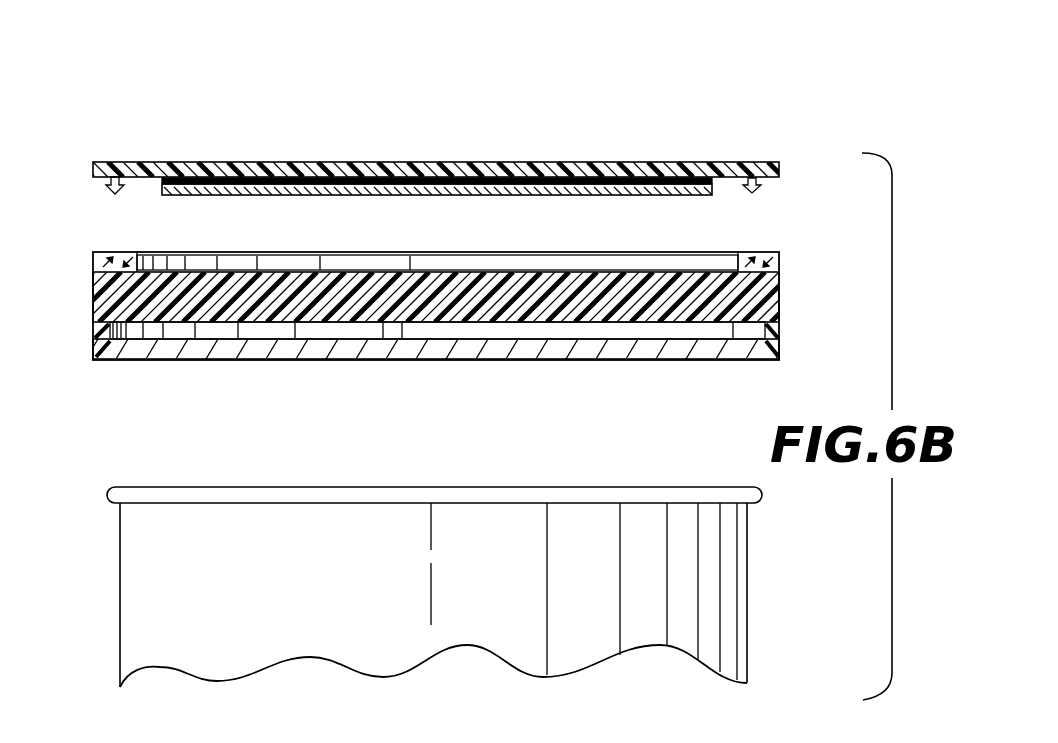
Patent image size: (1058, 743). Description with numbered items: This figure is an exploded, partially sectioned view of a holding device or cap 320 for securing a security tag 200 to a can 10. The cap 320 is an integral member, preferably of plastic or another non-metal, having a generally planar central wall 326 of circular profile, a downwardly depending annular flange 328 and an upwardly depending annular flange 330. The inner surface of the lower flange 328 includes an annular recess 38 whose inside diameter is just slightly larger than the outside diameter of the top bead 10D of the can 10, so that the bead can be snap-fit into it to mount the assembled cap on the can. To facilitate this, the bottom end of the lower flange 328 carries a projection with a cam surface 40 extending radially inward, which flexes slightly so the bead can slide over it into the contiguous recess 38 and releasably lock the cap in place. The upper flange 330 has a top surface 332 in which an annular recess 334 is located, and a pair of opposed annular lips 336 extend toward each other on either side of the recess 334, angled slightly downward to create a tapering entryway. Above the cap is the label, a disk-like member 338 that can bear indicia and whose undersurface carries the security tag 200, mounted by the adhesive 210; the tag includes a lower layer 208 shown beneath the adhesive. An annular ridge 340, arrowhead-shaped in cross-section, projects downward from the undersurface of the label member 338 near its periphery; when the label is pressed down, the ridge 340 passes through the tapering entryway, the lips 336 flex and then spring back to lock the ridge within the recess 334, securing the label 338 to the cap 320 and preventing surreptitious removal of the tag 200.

The can 10 is at (407, 556).
The top bead 10D is at (177, 492).
The annular recess 38 is at (352, 332).
The cam surface 40 is at (115, 342).
The security tag 200 is at (422, 152).
The lower layer 208 is at (288, 197).
The adhesive 210 is at (188, 175).
The holding device 320 is at (415, 143).
The central wall 326 is at (633, 313).
The downwardly depending annular flange 328 is at (781, 345).
The upwardly depending annular flange 330 is at (460, 263).
The top surface 332 is at (388, 250).
The annular recess 334 is at (98, 265).
The annular lips 336 is at (763, 257).
The disk-like member 338 is at (472, 167).
The annular ridge 340 is at (107, 192).